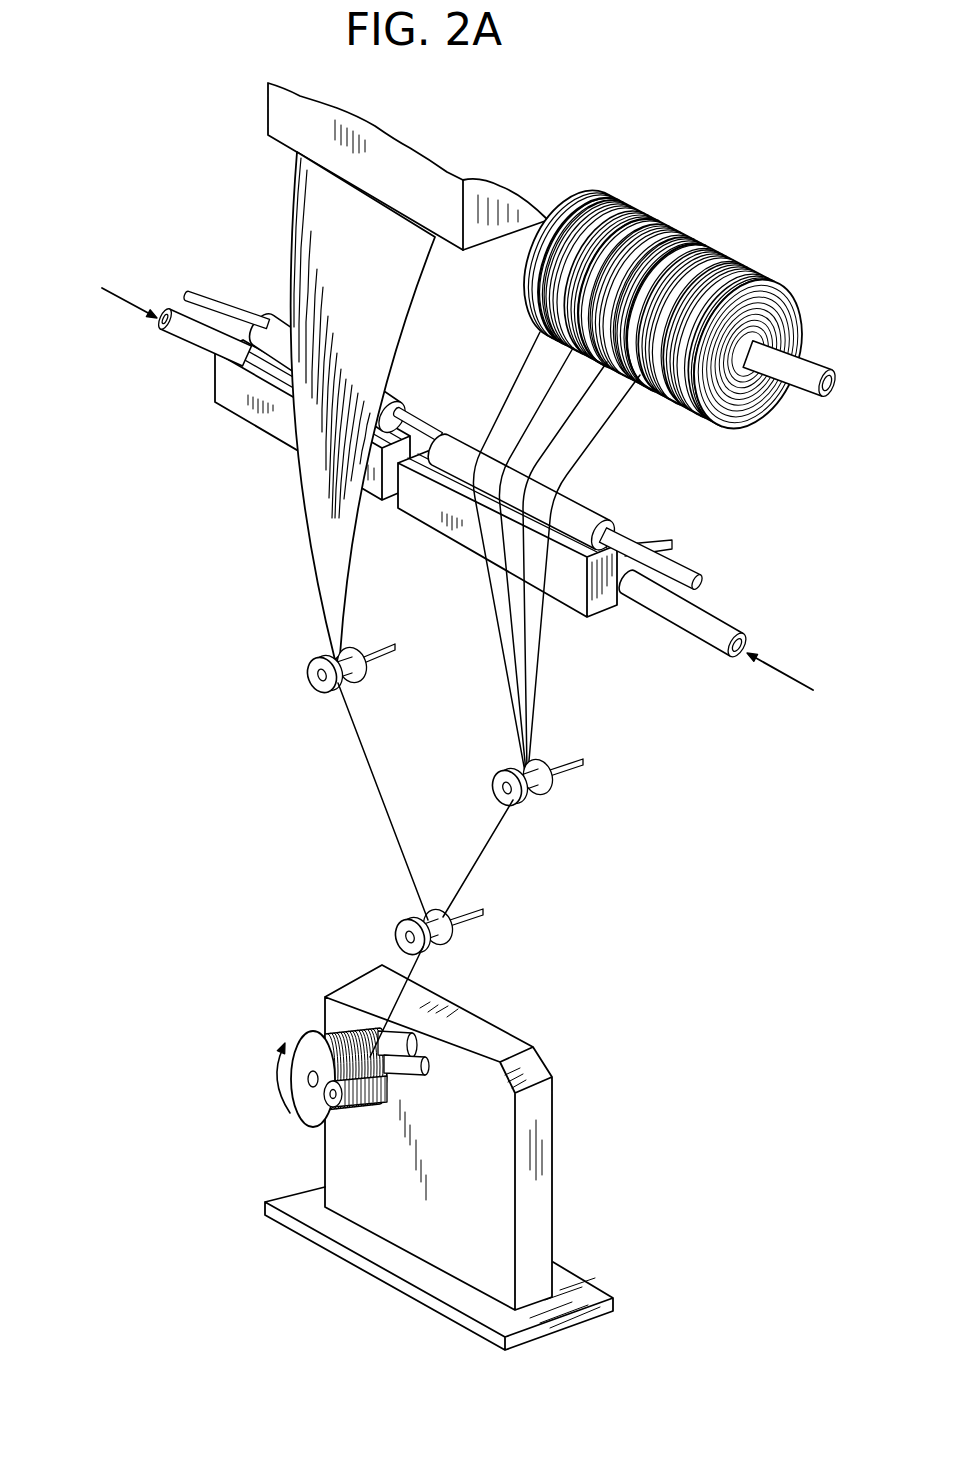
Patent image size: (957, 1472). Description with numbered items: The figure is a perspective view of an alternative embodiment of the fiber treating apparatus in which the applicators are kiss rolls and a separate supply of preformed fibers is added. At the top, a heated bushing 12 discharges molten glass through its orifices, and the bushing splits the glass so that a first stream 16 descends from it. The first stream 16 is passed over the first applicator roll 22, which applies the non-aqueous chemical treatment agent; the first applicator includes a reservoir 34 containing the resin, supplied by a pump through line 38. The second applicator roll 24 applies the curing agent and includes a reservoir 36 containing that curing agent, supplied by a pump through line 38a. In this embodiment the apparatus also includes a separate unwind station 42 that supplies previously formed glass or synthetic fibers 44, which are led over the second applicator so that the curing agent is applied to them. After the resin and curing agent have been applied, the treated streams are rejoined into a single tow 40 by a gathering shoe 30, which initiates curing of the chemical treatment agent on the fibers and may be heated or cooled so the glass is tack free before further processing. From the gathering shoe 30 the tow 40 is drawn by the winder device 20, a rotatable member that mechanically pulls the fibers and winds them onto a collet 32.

The heated bushing 12 is at (287, 130).
The first stream 16 is at (288, 221).
The winder device 20 is at (276, 1026).
The first applicator roll 22 is at (268, 323).
The second applicator roll 24 is at (588, 508).
The gathering shoe 30 is at (428, 940).
The collet 32 is at (307, 1113).
The reservoir 34 is at (237, 403).
The reservoir 36 is at (600, 602).
The line 38 is at (185, 343).
The line 38a is at (703, 621).
The tow 40 is at (413, 970).
The unwind station 42 is at (748, 238).
The previously formed glass or synthetic fibers 44 is at (585, 465).